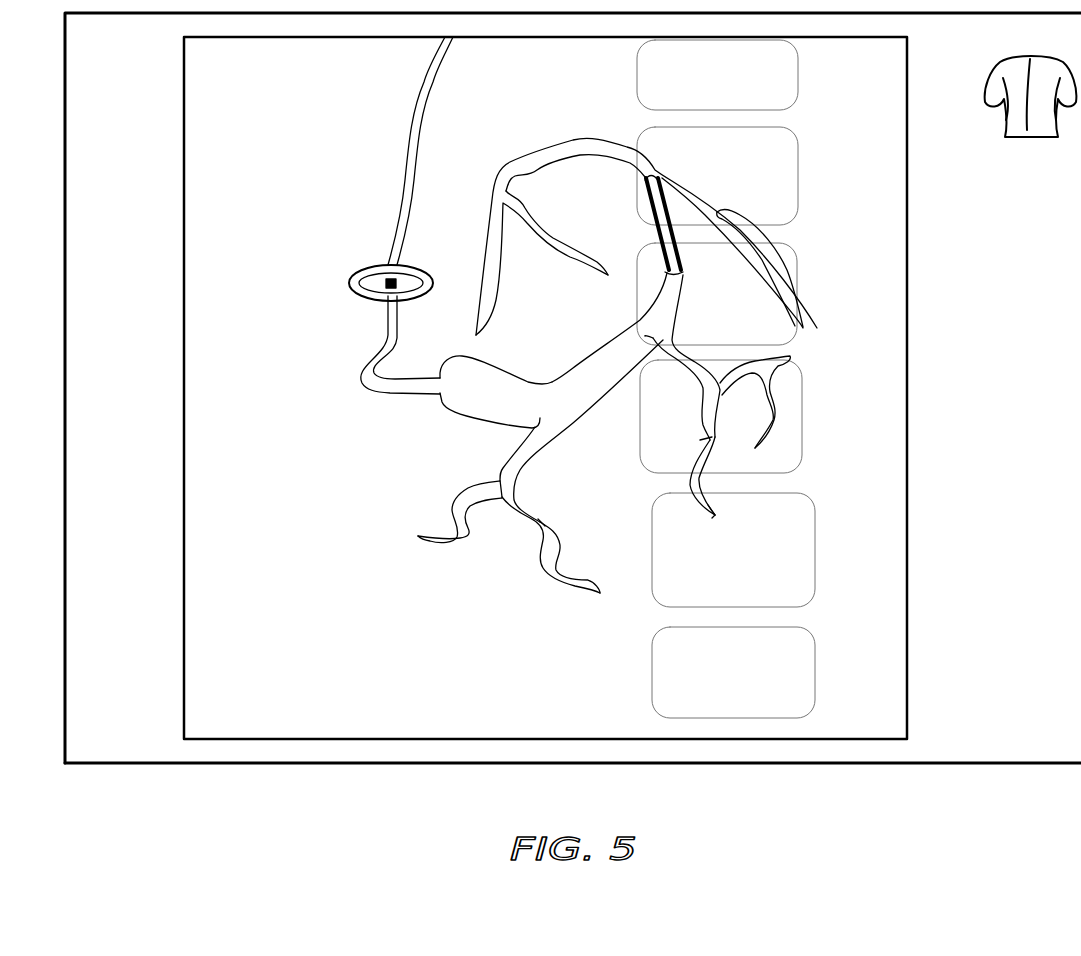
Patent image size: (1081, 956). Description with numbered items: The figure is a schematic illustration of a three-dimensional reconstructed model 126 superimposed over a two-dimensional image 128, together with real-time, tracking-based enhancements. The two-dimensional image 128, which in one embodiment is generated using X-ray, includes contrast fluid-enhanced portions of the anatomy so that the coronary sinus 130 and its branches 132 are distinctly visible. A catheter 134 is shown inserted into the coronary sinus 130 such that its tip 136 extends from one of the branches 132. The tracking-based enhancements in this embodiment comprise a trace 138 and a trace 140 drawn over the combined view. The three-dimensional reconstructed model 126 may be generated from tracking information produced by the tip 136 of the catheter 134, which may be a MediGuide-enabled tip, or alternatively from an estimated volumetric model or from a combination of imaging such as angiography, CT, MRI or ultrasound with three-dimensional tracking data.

The 3D reconstructed model 126 is at (575, 360).
The 2D image 128 is at (843, 568).
The coronary sinus 130 is at (688, 262).
The branches 132 is at (562, 147).
The catheter 134 is at (380, 345).
The tip 136 is at (712, 518).
The trace 138 is at (645, 182).
The trace 140 is at (690, 462).